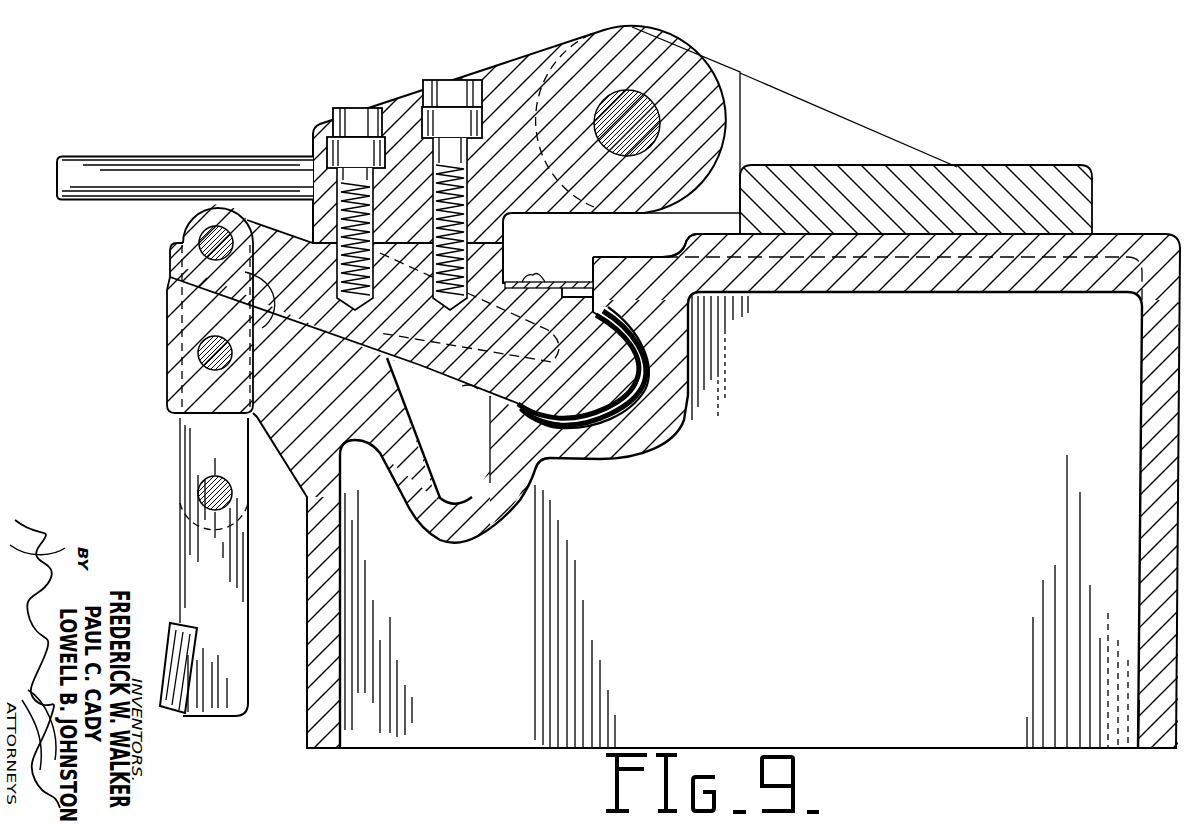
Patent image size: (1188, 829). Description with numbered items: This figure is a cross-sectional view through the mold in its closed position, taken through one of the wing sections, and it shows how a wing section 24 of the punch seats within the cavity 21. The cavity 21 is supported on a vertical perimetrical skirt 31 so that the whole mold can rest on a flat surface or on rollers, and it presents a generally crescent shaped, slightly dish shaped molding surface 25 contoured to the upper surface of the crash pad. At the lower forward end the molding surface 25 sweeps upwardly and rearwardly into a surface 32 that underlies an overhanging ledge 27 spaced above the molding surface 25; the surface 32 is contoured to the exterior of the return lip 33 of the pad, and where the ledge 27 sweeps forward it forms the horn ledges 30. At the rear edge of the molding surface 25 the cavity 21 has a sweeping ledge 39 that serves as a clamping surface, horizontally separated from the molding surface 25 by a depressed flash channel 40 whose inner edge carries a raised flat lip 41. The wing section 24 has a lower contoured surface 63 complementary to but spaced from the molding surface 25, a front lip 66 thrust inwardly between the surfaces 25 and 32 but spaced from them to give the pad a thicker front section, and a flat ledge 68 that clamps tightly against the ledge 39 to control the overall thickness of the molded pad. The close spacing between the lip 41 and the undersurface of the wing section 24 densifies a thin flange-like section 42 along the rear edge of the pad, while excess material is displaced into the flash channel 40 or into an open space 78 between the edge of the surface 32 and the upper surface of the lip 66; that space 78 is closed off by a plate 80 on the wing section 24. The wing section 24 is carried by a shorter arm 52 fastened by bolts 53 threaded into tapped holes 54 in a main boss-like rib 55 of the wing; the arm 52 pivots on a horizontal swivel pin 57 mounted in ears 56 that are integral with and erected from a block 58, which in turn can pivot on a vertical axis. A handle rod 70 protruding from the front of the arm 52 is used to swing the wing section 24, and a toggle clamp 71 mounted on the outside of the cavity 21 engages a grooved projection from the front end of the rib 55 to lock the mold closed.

The cavity 21 is at (918, 714).
The wing section 24 is at (554, 264).
The molding surface 25 is at (597, 430).
The overhanging ledge 27 is at (663, 256).
The horn ledges 30 is at (592, 256).
The vertical perimetrical skirt 31 is at (1140, 650).
The rearwardly and upwardly sweeping surface 32 is at (643, 355).
The return lip 33 is at (645, 335).
The sweeping ledge 39 is at (170, 276).
The flash channel 40 is at (490, 505).
The raised flat lip 41 is at (476, 388).
The flange-like section 42 is at (505, 410).
The arms 52 is at (499, 67).
The bolts 53 is at (357, 143).
The tapped holes 54 is at (338, 233).
The main boss-like ribs 55 is at (504, 256).
The ears 56 is at (741, 73).
The horizontal swivel pins 57 is at (662, 97).
The blocks 58 is at (975, 166).
The lower contoured surface 63 is at (567, 428).
The front lips 66 is at (650, 400).
The flat ledge 68 is at (258, 327).
The handle rods 70 is at (143, 154).
The toggle clamps 71 is at (176, 448).
The open space 78 is at (717, 297).
The plates 80 is at (598, 270).